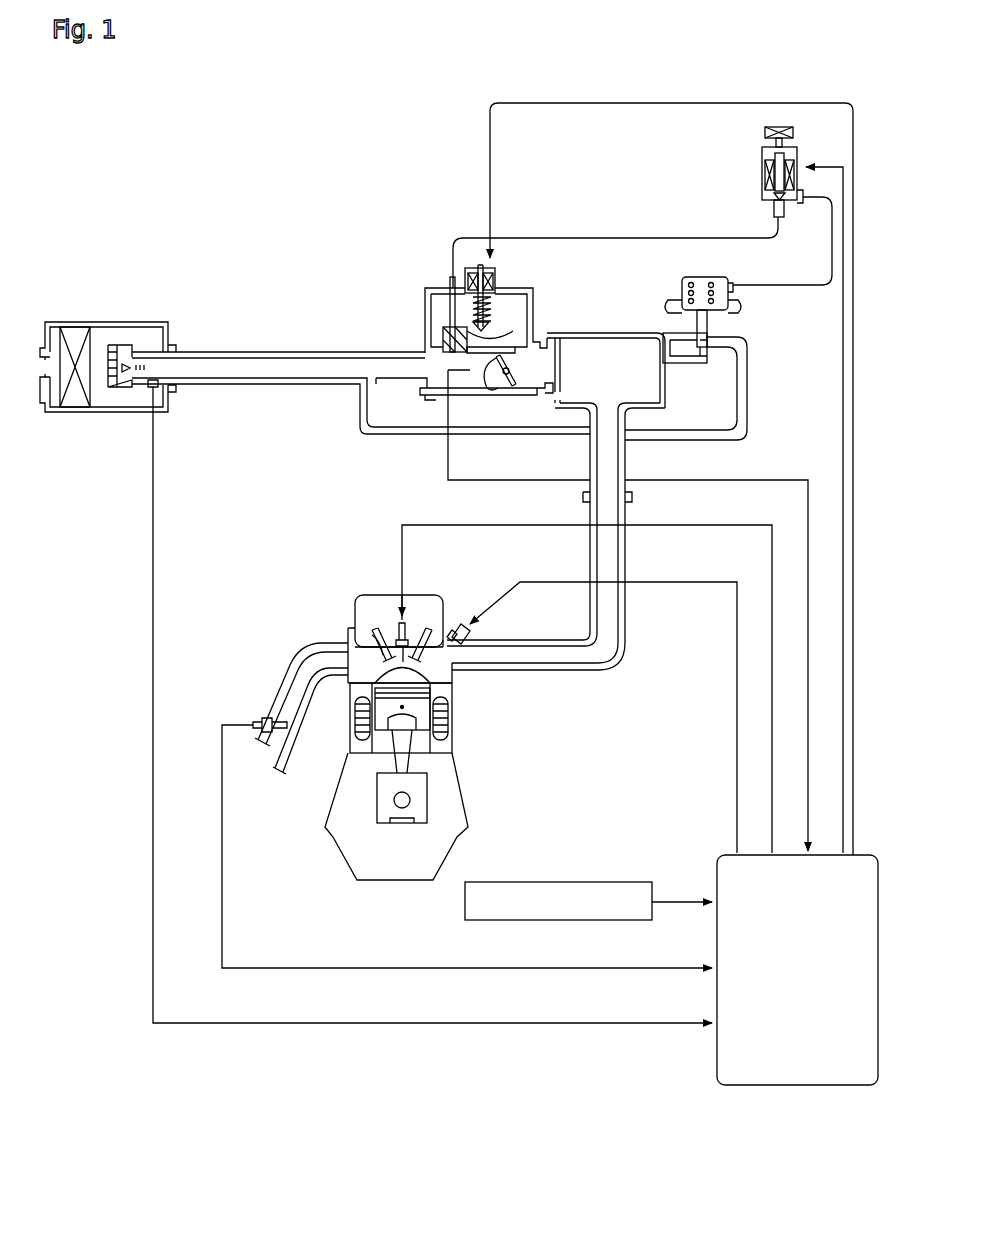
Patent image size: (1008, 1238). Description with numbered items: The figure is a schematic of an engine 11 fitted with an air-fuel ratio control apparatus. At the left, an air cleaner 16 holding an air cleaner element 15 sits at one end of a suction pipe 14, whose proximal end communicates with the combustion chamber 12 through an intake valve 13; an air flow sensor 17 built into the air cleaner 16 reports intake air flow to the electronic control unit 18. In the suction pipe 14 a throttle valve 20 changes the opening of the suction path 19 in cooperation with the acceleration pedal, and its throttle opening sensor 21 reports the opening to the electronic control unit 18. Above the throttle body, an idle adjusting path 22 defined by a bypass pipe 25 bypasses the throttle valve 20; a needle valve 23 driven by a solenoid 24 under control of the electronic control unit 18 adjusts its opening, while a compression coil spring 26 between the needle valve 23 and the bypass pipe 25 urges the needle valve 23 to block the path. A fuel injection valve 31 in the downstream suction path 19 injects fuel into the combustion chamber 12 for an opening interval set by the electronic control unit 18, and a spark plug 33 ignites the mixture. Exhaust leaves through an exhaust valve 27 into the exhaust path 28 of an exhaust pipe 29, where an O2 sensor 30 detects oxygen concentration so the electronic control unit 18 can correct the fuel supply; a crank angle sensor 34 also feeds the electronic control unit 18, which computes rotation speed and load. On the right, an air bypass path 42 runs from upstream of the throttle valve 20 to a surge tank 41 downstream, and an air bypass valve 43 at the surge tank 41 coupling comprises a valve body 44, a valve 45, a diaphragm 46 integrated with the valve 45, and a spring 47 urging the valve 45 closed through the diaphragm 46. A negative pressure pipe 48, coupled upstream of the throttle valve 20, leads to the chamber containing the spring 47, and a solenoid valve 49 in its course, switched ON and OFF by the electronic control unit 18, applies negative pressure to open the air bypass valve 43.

The engine 11 is at (370, 860).
The combustion chamber 12 is at (420, 695).
The intake valve 13 is at (420, 640).
The suction pipe 14 is at (626, 641).
The air cleaner element 15 is at (77, 407).
The air cleaner 16 is at (130, 322).
The air flow sensor 17 is at (162, 395).
The electronic control unit 18 is at (720, 855).
The suction path 19 is at (353, 372).
The throttle valve 20 is at (507, 400).
The throttle opening sensor 21 is at (497, 382).
The idle adjusting path 22 is at (443, 320).
The needle valve 23 is at (527, 328).
The solenoid 24 is at (463, 275).
The bypass pipe 25 is at (430, 297).
The compression coil spring 26 is at (497, 307).
The exhaust valve 27 is at (388, 662).
The exhaust path 28 is at (302, 700).
The exhaust pipe 29 is at (293, 680).
The O2 sensor 30 is at (275, 715).
The fuel injection valve 31 is at (470, 646).
The spark plug 33 is at (383, 655).
The crank angle sensor 34 is at (585, 882).
The surge tank 41 is at (667, 388).
The air bypass path 42 is at (742, 437).
The air bypass valve 43 is at (734, 323).
The valve body 44 is at (668, 303).
The valve 45 is at (690, 330).
The diaphragm 46 is at (740, 305).
The spring 47 is at (697, 278).
The negative pressure pipe 48 is at (698, 238).
The solenoid valve 49 is at (757, 180).